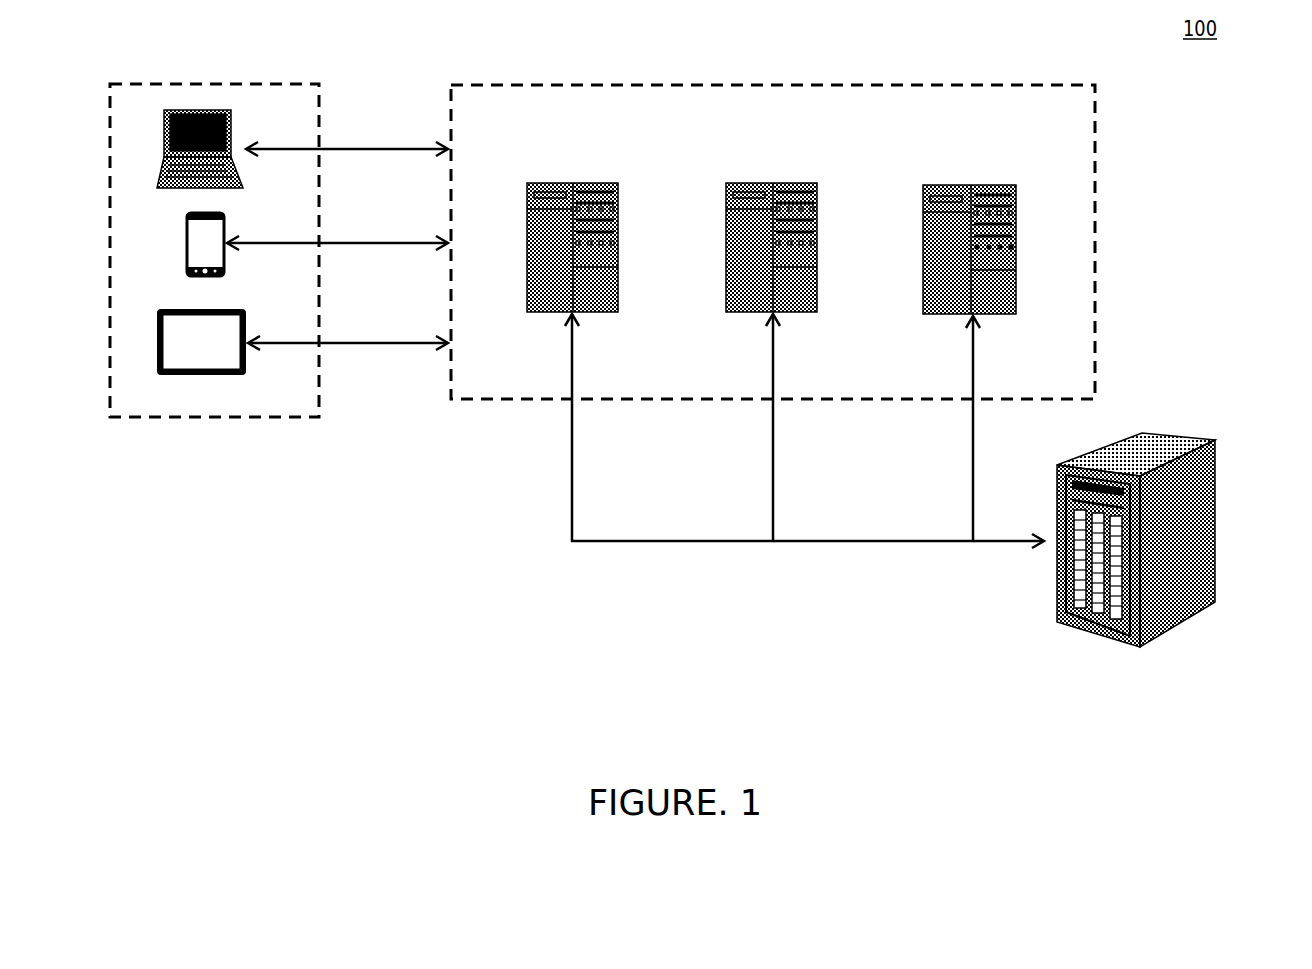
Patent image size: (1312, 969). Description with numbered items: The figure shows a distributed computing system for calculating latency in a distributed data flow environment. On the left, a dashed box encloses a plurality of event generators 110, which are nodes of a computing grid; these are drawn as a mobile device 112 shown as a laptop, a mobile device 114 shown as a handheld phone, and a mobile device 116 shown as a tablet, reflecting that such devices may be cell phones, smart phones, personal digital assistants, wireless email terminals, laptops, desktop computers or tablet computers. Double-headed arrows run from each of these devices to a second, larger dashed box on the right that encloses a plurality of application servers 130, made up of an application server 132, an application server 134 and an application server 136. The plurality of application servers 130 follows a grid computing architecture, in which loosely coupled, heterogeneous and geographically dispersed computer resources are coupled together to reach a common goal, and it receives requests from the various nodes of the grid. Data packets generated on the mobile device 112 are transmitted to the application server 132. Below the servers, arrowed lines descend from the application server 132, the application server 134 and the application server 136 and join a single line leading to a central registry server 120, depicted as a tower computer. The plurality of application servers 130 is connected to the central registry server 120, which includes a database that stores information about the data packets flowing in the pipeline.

The plurality of event generators 110 is at (210, 84).
The mobile device 112 is at (197, 110).
The mobile device 114 is at (205, 213).
The mobile device 116 is at (198, 310).
The central registry server 120 is at (1215, 540).
The plurality of application servers 130 is at (770, 85).
The application server 132 is at (573, 183).
The application server 134 is at (773, 183).
The application server 136 is at (971, 185).